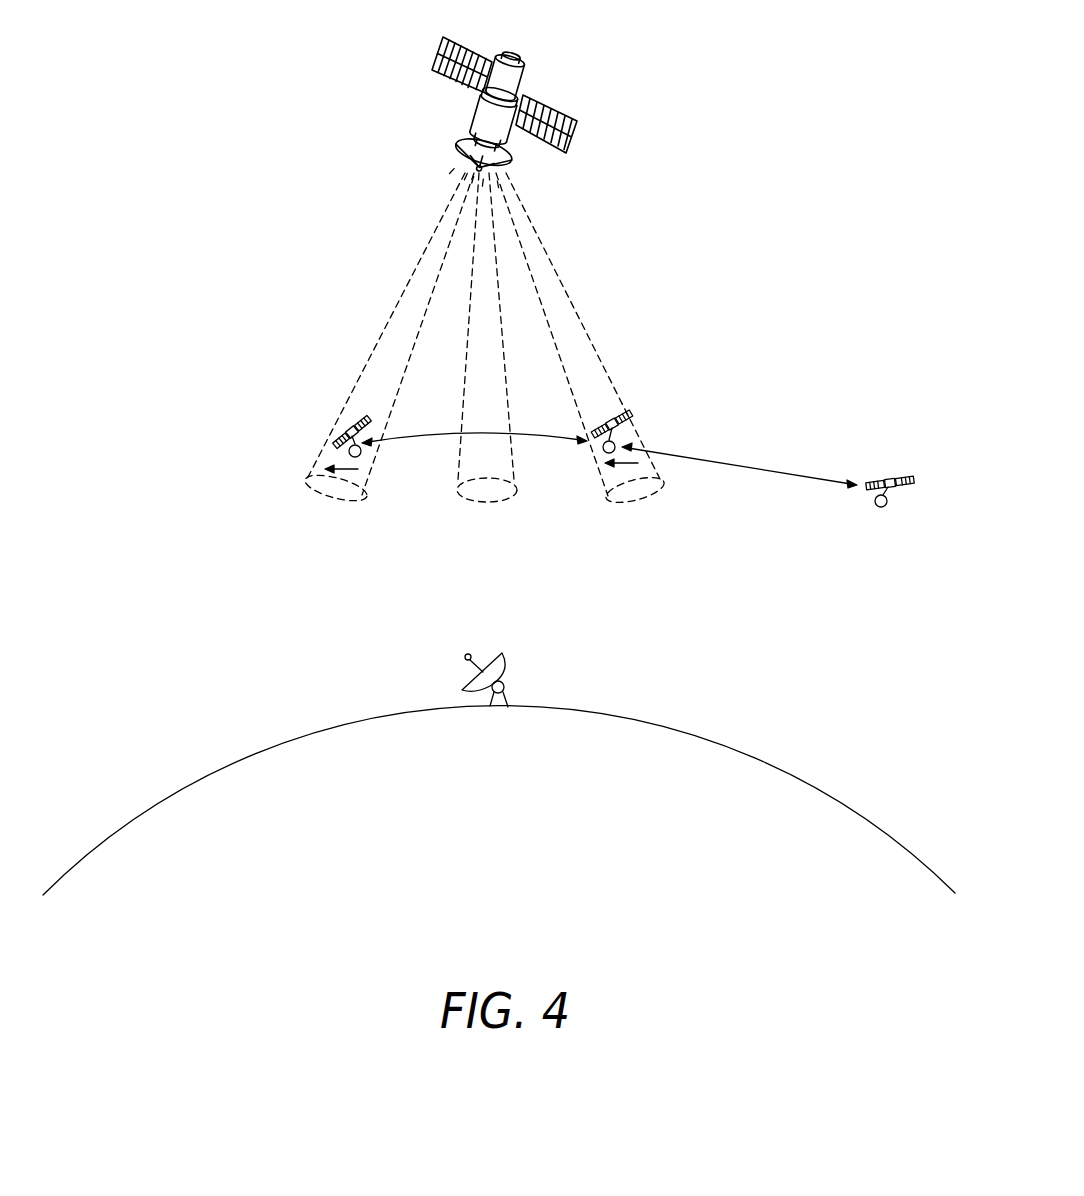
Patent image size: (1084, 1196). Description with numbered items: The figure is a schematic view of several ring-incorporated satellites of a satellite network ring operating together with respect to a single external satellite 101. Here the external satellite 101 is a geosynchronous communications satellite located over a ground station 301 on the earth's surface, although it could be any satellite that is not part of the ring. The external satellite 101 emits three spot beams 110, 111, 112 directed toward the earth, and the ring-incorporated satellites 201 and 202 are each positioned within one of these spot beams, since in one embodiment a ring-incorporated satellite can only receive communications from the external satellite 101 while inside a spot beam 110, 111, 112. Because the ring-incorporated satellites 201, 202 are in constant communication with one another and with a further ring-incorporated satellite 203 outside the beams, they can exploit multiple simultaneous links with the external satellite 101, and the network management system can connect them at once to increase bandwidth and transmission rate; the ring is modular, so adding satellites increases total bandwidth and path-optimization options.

The external satellite 101 is at (517, 56).
The spot beam 110 is at (423, 278).
The spot beam 111 is at (482, 235).
The spot beam 112 is at (530, 260).
The ring-incorporated satellite 201 is at (350, 432).
The ring-incorporated satellite 202 is at (620, 415).
The ring-incorporated satellite 203 is at (890, 478).
The ground station 301 is at (498, 655).